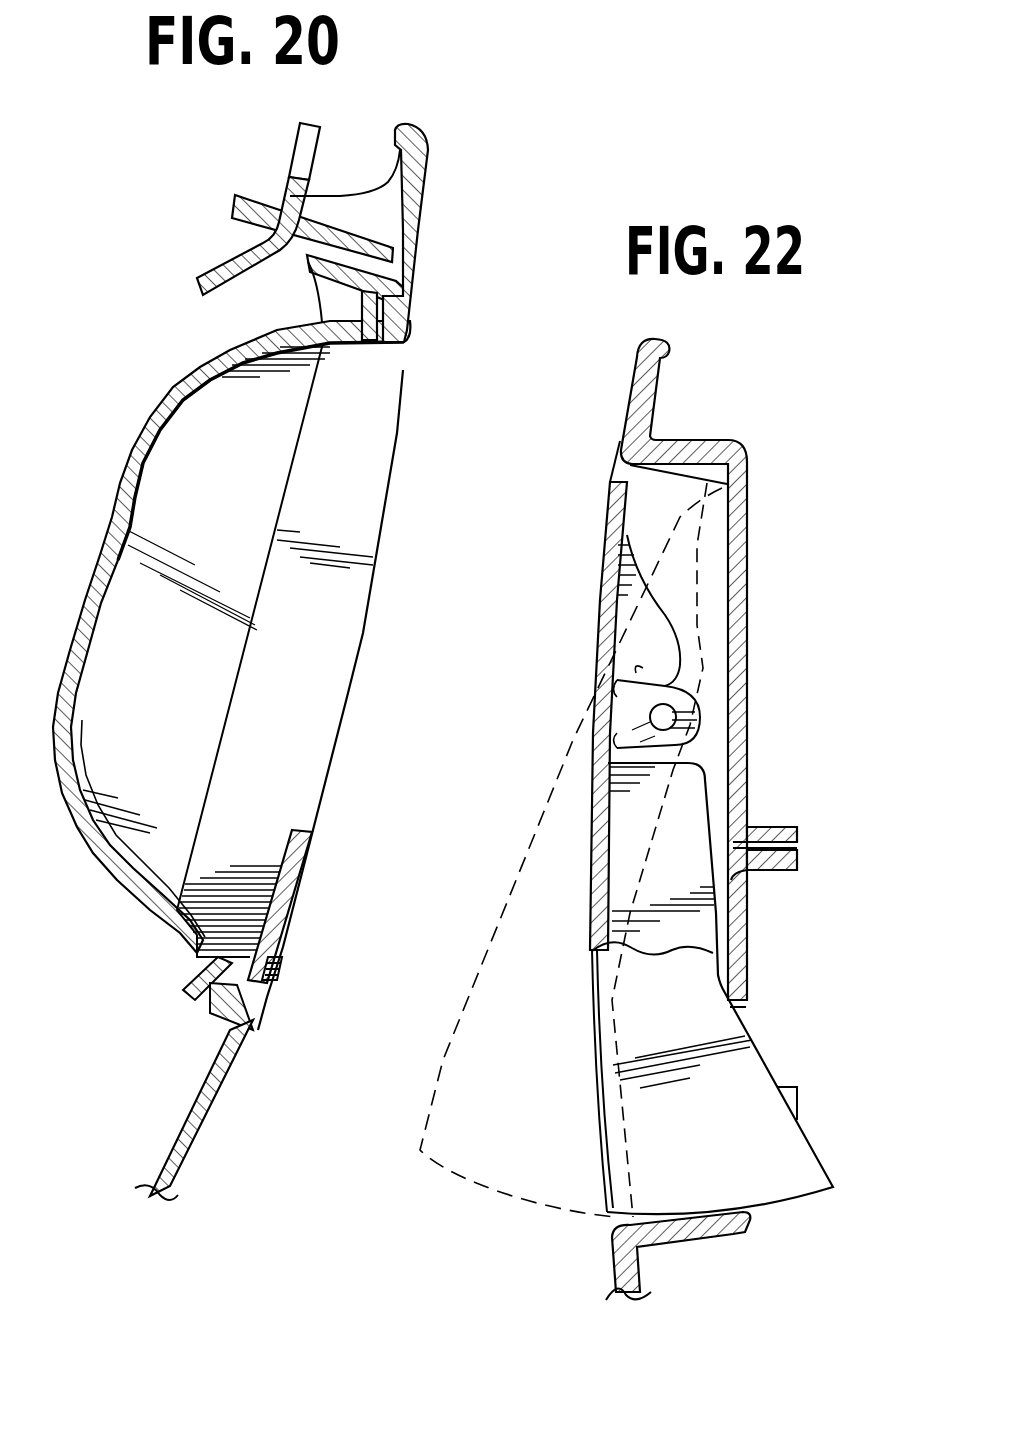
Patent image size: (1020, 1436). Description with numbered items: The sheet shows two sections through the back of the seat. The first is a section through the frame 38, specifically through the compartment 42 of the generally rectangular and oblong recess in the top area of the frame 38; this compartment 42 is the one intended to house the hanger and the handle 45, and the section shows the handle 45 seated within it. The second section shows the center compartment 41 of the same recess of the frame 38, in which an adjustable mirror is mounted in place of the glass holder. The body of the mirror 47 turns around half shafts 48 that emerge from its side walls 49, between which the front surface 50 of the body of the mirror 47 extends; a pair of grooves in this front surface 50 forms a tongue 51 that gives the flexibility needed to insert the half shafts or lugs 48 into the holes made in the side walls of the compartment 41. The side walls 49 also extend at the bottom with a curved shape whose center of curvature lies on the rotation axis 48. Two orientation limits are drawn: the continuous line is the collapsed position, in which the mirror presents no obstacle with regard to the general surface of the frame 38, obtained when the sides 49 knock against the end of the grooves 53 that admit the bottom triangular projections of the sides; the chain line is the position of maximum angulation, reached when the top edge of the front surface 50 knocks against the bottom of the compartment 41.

In FIG. 20, the frame 38 is at (193, 1132).
In FIG. 22, the frame 38 is at (637, 403).
In FIG. 22, the center compartment 41 is at (723, 516).
In FIG. 20, the compartment 42 is at (120, 497).
In FIG. 20, the handle 45 is at (260, 882).
In FIG. 22, the body of the mirror 47 is at (527, 888).
In FIG. 22, the half shafts 48 is at (672, 727).
In FIG. 22, the side walls 49 is at (693, 833).
In FIG. 22, the front surface 50 is at (590, 1053).
In FIG. 22, the tongue 51 is at (688, 710).
In FIG. 22, the grooves 53 is at (742, 1007).